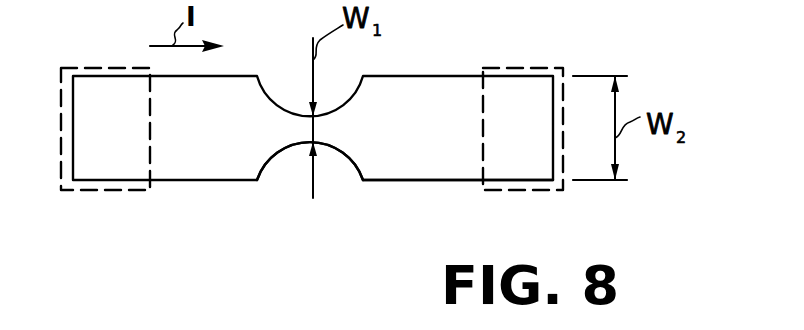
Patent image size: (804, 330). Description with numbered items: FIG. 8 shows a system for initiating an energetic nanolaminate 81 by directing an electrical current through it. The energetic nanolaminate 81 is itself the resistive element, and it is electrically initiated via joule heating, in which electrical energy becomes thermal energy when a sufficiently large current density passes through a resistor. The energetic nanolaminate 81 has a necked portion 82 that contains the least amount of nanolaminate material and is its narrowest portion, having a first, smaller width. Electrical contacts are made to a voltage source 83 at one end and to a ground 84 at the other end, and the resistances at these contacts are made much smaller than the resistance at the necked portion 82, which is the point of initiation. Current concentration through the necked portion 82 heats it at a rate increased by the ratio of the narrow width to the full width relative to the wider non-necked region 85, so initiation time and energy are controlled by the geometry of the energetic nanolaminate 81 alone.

The energetic nanolaminate 81 is at (443, 122).
The necked portion 82 is at (293, 152).
The voltage source 83 is at (113, 157).
The ground 84 is at (525, 97).
The non-necked region 85 is at (410, 160).